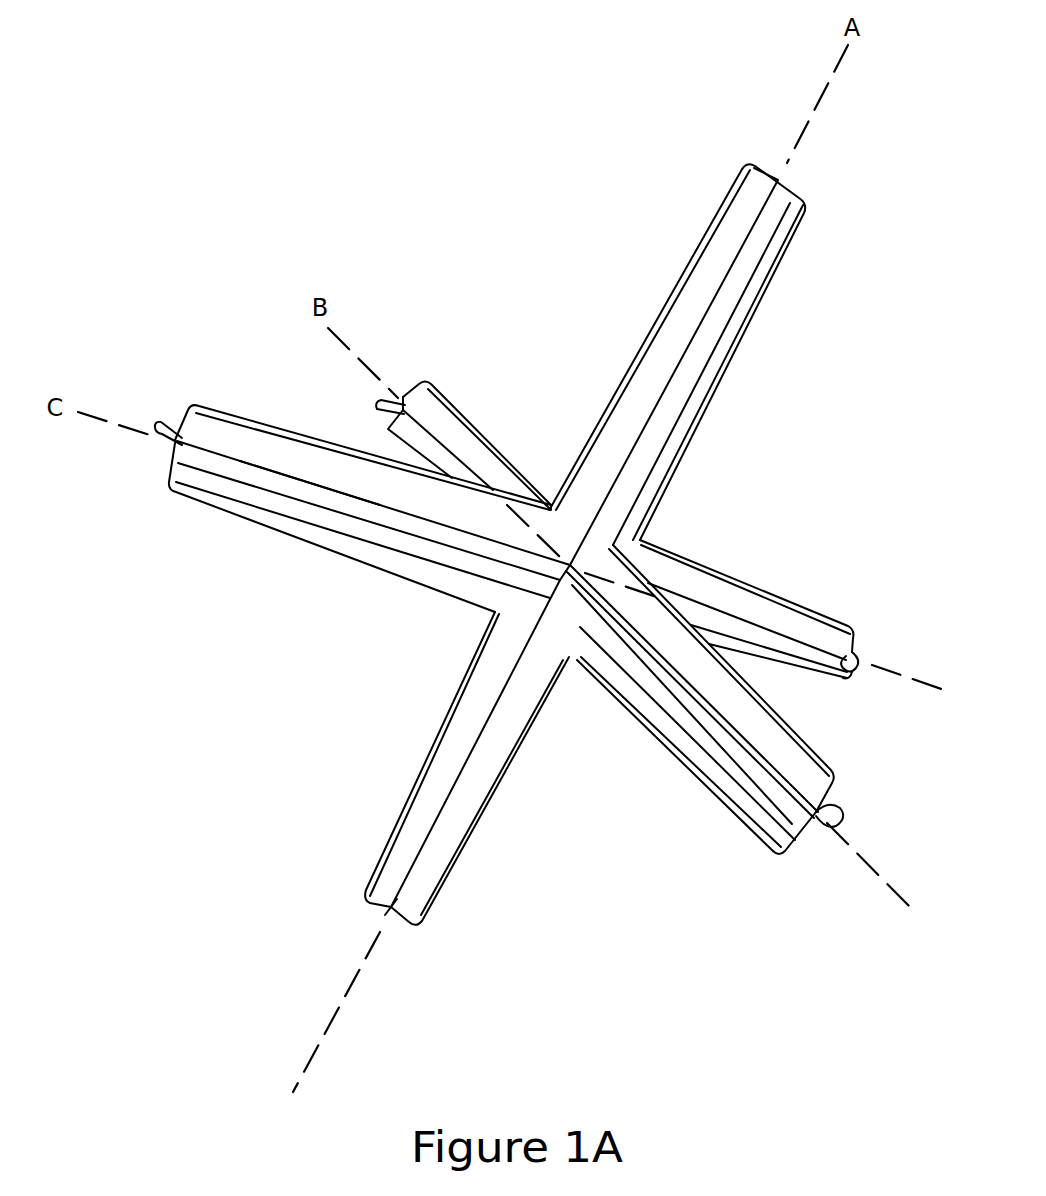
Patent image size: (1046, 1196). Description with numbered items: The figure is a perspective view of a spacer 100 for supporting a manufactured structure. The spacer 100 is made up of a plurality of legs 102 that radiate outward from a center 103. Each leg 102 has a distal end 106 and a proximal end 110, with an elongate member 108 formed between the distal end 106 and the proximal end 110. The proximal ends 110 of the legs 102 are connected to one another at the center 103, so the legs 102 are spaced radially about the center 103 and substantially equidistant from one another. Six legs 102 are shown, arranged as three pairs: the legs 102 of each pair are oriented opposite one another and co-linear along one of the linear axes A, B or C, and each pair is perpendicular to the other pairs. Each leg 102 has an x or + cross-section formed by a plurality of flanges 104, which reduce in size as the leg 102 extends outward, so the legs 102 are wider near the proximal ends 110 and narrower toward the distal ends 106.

The spacer 100 is at (388, 168).
The legs 102 is at (643, 320).
The center 103 is at (568, 553).
The flanges 104 is at (162, 405).
The distal end 106 is at (158, 452).
The elongate member 108 is at (353, 475).
The proximal end 110 is at (551, 518).